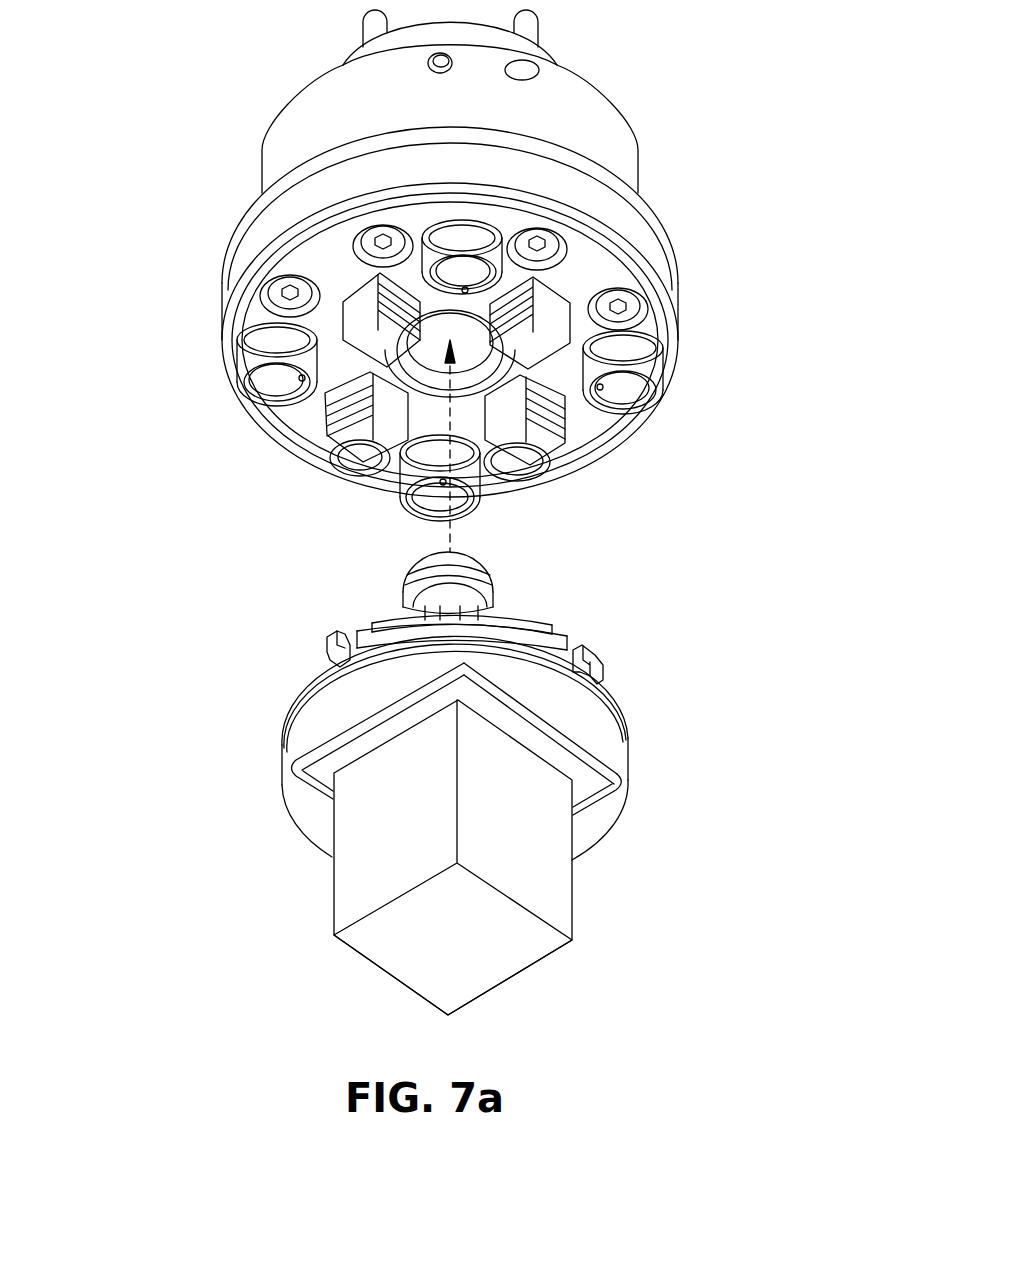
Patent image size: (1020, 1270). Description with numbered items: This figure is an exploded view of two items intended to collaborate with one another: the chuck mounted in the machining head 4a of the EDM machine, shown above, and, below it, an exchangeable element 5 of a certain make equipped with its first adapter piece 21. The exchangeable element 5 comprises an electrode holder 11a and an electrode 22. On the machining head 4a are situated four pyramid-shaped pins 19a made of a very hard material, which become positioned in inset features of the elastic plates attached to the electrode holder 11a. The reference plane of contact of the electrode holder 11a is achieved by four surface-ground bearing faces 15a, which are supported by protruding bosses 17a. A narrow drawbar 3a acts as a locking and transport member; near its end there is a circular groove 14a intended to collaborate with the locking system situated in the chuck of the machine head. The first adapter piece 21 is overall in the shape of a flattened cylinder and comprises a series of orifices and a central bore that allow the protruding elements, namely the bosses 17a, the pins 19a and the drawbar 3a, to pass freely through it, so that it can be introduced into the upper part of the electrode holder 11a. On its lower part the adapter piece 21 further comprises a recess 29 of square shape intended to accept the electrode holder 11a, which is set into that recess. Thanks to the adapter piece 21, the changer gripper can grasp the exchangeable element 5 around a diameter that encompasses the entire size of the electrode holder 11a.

The machining head 4a is at (624, 82).
The protruding bosses 17a is at (460, 240).
The bearing faces 15a is at (478, 277).
The pyramid-shaped pins 19a is at (383, 325).
The circular groove 14a is at (250, 353).
The drawbar 3a is at (477, 567).
The first adapter piece 21 is at (572, 718).
The recess 29 is at (323, 743).
The electrode holder 11a is at (582, 770).
The electrode 22 is at (548, 882).
The exchangeable element 5 is at (210, 815).